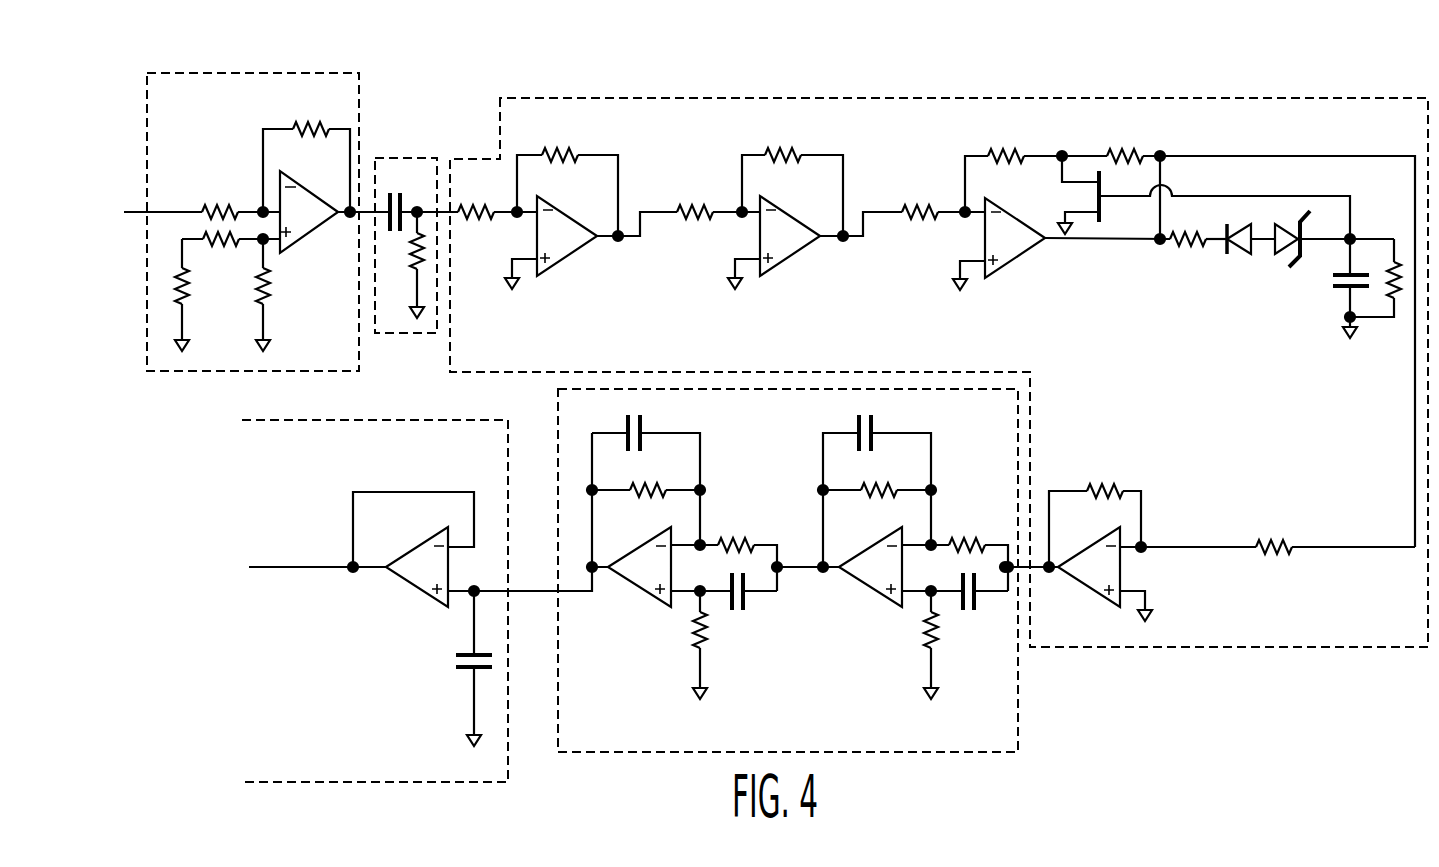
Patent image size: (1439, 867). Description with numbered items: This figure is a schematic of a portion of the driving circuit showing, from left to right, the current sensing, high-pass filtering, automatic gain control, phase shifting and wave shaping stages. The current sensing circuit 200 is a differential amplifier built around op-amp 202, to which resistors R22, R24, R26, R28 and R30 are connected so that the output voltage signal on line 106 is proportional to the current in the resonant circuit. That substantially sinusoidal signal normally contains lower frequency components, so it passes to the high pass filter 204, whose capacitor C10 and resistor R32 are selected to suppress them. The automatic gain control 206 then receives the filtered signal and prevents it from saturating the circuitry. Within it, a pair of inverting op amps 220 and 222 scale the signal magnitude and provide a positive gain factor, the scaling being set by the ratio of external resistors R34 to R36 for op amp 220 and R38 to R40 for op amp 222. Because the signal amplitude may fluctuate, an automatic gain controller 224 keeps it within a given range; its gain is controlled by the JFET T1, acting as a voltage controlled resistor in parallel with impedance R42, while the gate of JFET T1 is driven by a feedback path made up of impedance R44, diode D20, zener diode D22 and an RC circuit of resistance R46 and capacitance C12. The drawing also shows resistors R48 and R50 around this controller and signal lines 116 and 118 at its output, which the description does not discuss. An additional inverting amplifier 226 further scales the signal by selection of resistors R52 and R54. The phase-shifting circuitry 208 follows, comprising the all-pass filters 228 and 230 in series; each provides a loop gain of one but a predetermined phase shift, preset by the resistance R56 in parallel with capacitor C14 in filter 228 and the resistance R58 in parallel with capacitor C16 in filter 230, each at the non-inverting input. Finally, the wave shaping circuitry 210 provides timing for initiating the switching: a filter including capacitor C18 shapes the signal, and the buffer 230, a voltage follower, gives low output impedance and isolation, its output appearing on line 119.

The current sensing circuit 200 is at (243, 73).
The op-amp 202 is at (316, 233).
The resistor R22 is at (216, 182).
The resistor R24 is at (320, 124).
The resistor R26 is at (218, 232).
The resistor R28 is at (190, 282).
The resistor R30 is at (272, 282).
The line 106 is at (364, 210).
The high pass filter 204 is at (390, 158).
The capacitor C10 is at (393, 193).
The resistor R32 is at (414, 252).
The automatic gain control 206 is at (985, 98).
The external resistor R36 is at (467, 218).
The external resistor R34 is at (556, 146).
The inverting op amp 220 is at (569, 265).
The external resistor R40 is at (690, 205).
The external resistor R38 is at (780, 146).
The inverting op amp 222 is at (795, 265).
The resistor R50 is at (917, 205).
The feedback resistor R48 is at (1005, 150).
The automatic gain controller 224 is at (1020, 265).
The JFET T1 is at (1075, 181).
The impedance R42 is at (1132, 148).
The impedance R44 is at (1188, 249).
The diode D20 is at (1243, 254).
The zener diode D22 is at (1277, 255).
The capacitance C12 is at (1336, 291).
The resistance R46 is at (1400, 262).
The resistor R54 is at (1272, 540).
The resistor R52 is at (1106, 484).
The inverting amplifier 226 is at (1145, 575).
The output signal line 116 is at (1032, 568).
The phase-shifting circuitry 208 is at (1018, 738).
The signal line 118 is at (522, 590).
The all-pass filter 230 is at (395, 600).
The capacitor C16 is at (745, 608).
The resistance R58 is at (700, 633).
The all-pass filter 228 is at (876, 598).
The capacitor C14 is at (975, 608).
The resistance R56 is at (930, 633).
The wave shaping circuitry 210 is at (375, 782).
The line 119 is at (283, 567).
The capacitor C18 is at (455, 658).